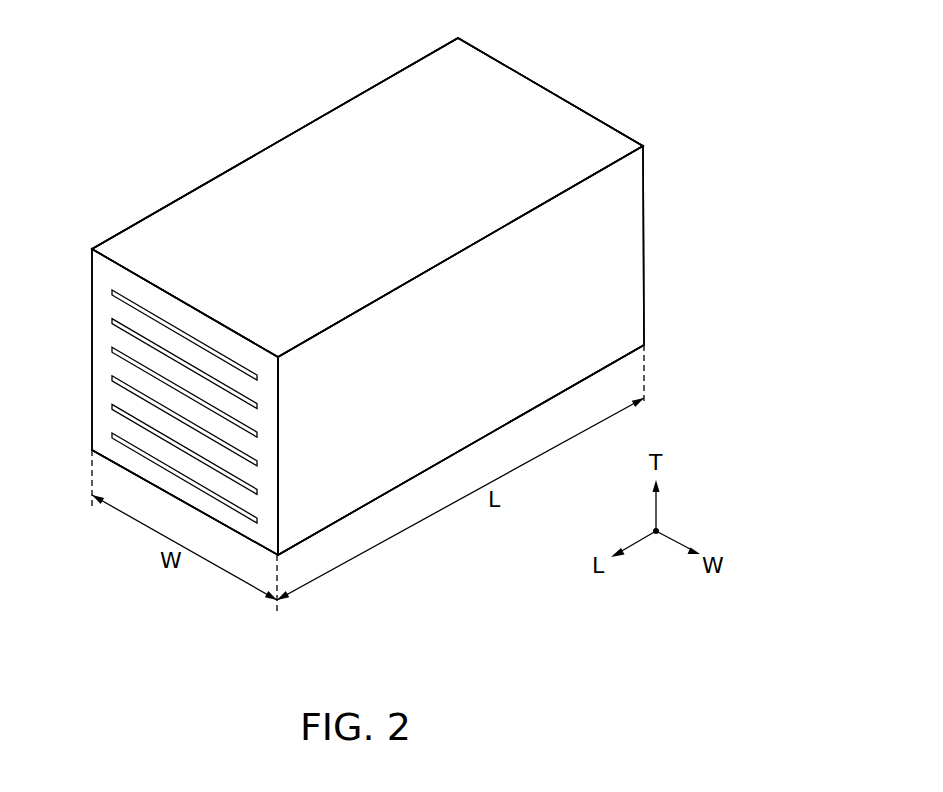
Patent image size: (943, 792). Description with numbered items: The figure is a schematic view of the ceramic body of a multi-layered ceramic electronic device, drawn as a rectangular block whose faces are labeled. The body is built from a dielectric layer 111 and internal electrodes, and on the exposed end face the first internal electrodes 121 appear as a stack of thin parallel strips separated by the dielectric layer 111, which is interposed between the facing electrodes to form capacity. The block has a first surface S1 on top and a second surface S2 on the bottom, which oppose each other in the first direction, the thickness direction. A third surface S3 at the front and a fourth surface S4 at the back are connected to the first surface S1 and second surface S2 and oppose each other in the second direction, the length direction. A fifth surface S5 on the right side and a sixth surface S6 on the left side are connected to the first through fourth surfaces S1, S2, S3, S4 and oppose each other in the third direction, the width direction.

The dielectric layer 111 is at (100, 337).
The first internal electrode 121 is at (118, 299).
The first surface S1 is at (382, 122).
The second surface S2 is at (405, 496).
The third surface S3 is at (177, 414).
The fourth surface S4 is at (573, 89).
The fifth surface S5 is at (525, 391).
The sixth surface S6 is at (195, 173).